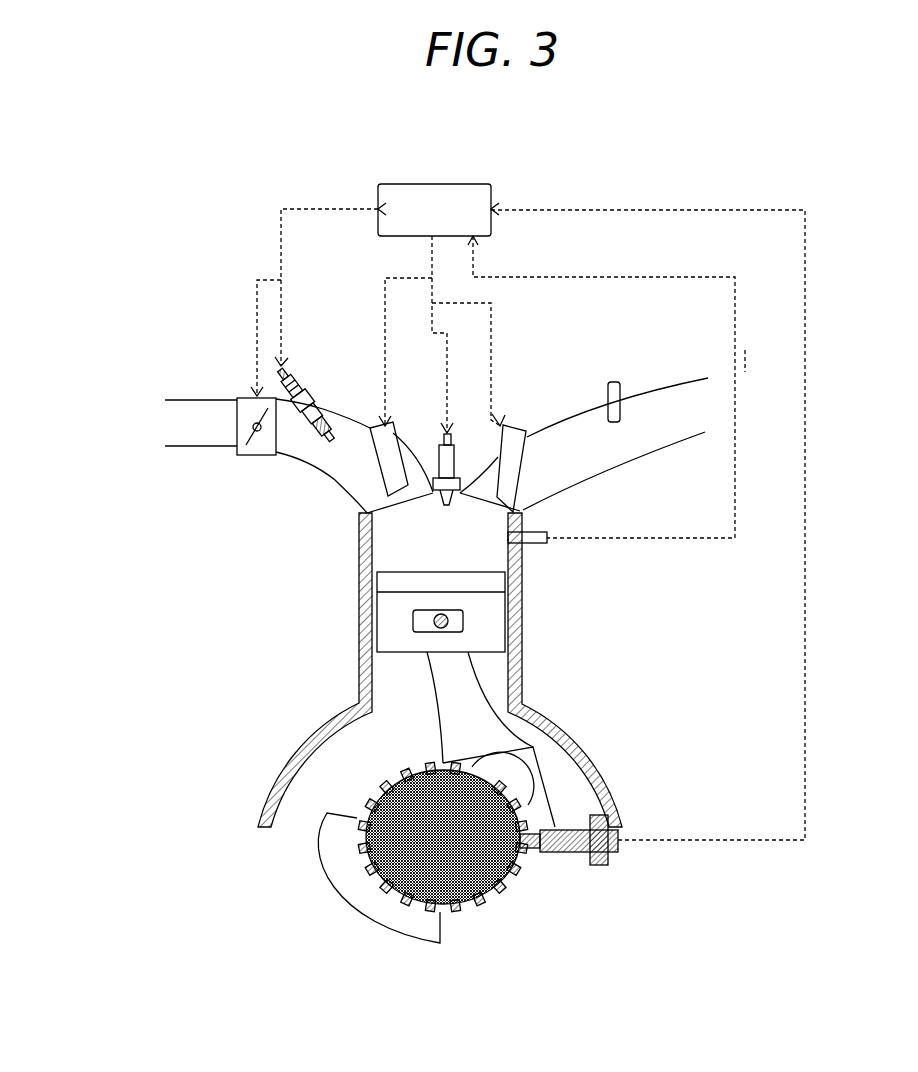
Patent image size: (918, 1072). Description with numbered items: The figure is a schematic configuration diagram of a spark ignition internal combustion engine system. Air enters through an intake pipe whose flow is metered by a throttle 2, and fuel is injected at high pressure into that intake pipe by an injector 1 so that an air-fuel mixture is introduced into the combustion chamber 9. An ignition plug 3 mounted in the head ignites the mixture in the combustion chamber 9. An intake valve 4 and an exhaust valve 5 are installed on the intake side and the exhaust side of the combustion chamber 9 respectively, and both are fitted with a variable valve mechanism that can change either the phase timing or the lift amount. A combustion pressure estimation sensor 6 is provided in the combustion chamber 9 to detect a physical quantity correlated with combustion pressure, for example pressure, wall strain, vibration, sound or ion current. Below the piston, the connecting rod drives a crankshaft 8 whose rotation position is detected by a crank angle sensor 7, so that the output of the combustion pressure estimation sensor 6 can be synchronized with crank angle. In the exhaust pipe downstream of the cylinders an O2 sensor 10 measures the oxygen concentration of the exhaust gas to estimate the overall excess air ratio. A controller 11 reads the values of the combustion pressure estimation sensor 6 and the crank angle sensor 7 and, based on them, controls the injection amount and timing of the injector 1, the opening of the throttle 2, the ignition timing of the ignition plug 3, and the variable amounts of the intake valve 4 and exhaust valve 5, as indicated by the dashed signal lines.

The injector 1 is at (309, 375).
The throttle 2 is at (258, 392).
The ignition plug 3 is at (437, 440).
The intake valve 4 is at (372, 421).
The exhaust valve 5 is at (517, 424).
The combustion pressure estimation sensor 6 is at (540, 544).
The crank angle sensor 7 is at (610, 862).
The crankshaft 8 is at (480, 905).
The combustion chamber 9 is at (420, 533).
The O2 sensor 10 is at (612, 380).
The controller 11 is at (456, 185).